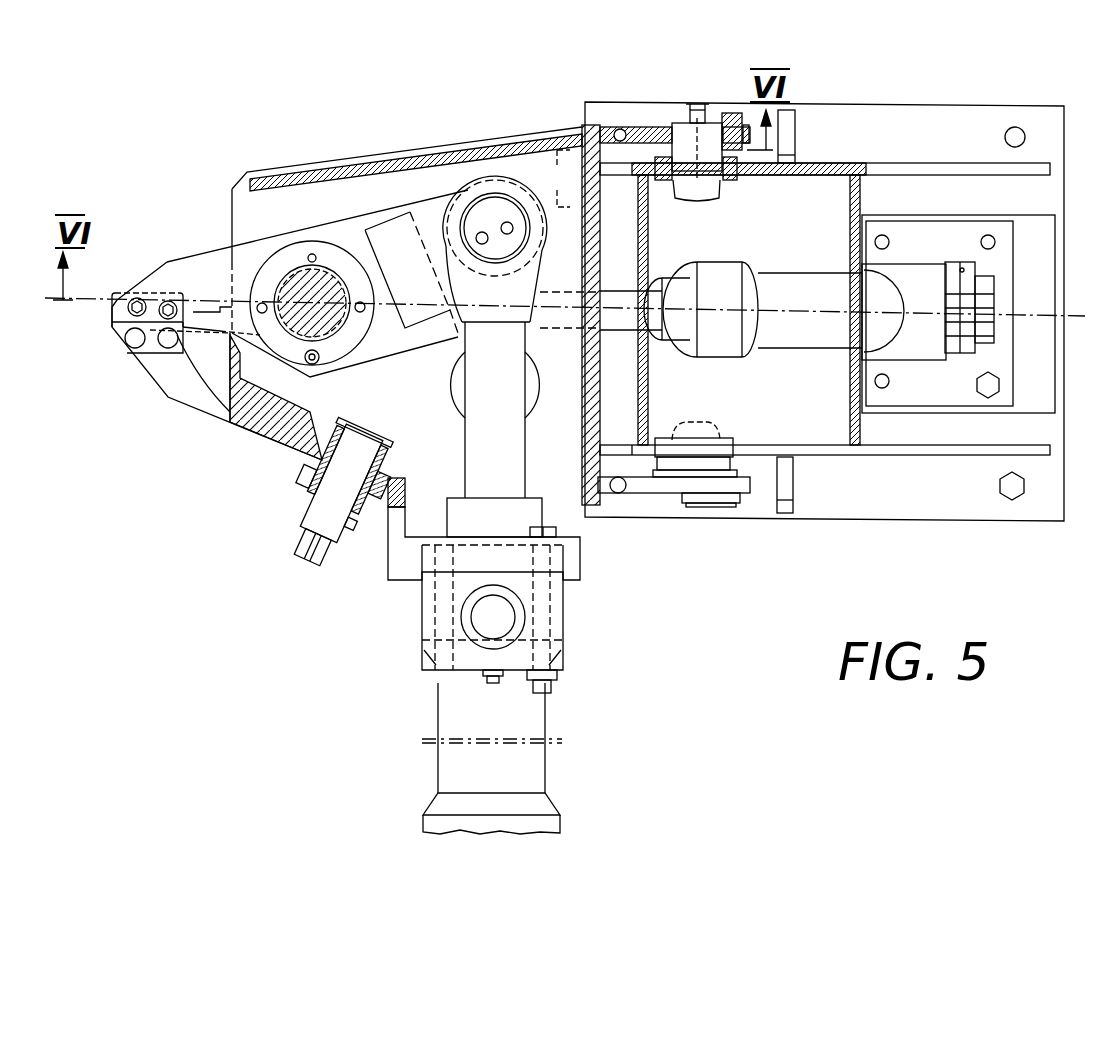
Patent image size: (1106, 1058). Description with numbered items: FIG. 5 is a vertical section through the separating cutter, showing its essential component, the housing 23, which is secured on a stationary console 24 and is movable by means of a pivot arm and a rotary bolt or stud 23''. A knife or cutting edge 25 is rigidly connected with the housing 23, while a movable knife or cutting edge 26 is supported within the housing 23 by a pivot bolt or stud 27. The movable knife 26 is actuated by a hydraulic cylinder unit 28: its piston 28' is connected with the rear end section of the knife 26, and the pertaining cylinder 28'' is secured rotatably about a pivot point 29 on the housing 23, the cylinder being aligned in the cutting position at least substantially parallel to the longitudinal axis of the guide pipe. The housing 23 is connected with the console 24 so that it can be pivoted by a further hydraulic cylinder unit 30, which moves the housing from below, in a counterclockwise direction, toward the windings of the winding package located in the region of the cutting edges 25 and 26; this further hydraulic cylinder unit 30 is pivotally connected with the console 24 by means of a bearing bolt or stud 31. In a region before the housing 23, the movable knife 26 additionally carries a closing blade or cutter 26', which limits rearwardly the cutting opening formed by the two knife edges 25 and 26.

The housing 23 is at (313, 456).
The rotary bolt or stud 23'' is at (676, 326).
The stationary console 24 is at (880, 468).
The knife or cutting edge 25 is at (162, 368).
The movable knife or cutting edge 26 is at (365, 274).
The closing blade or cutter 26' is at (189, 402).
The pivot bolt or stud 27 is at (308, 290).
The hydraulic cylinder unit 28 is at (512, 606).
The piston 28' is at (511, 356).
The cylinder 28'' is at (534, 758).
The pivot point 29 is at (503, 617).
The further hydraulic cylinder unit 30 is at (807, 362).
The bearing bolt or stud 31 is at (962, 338).